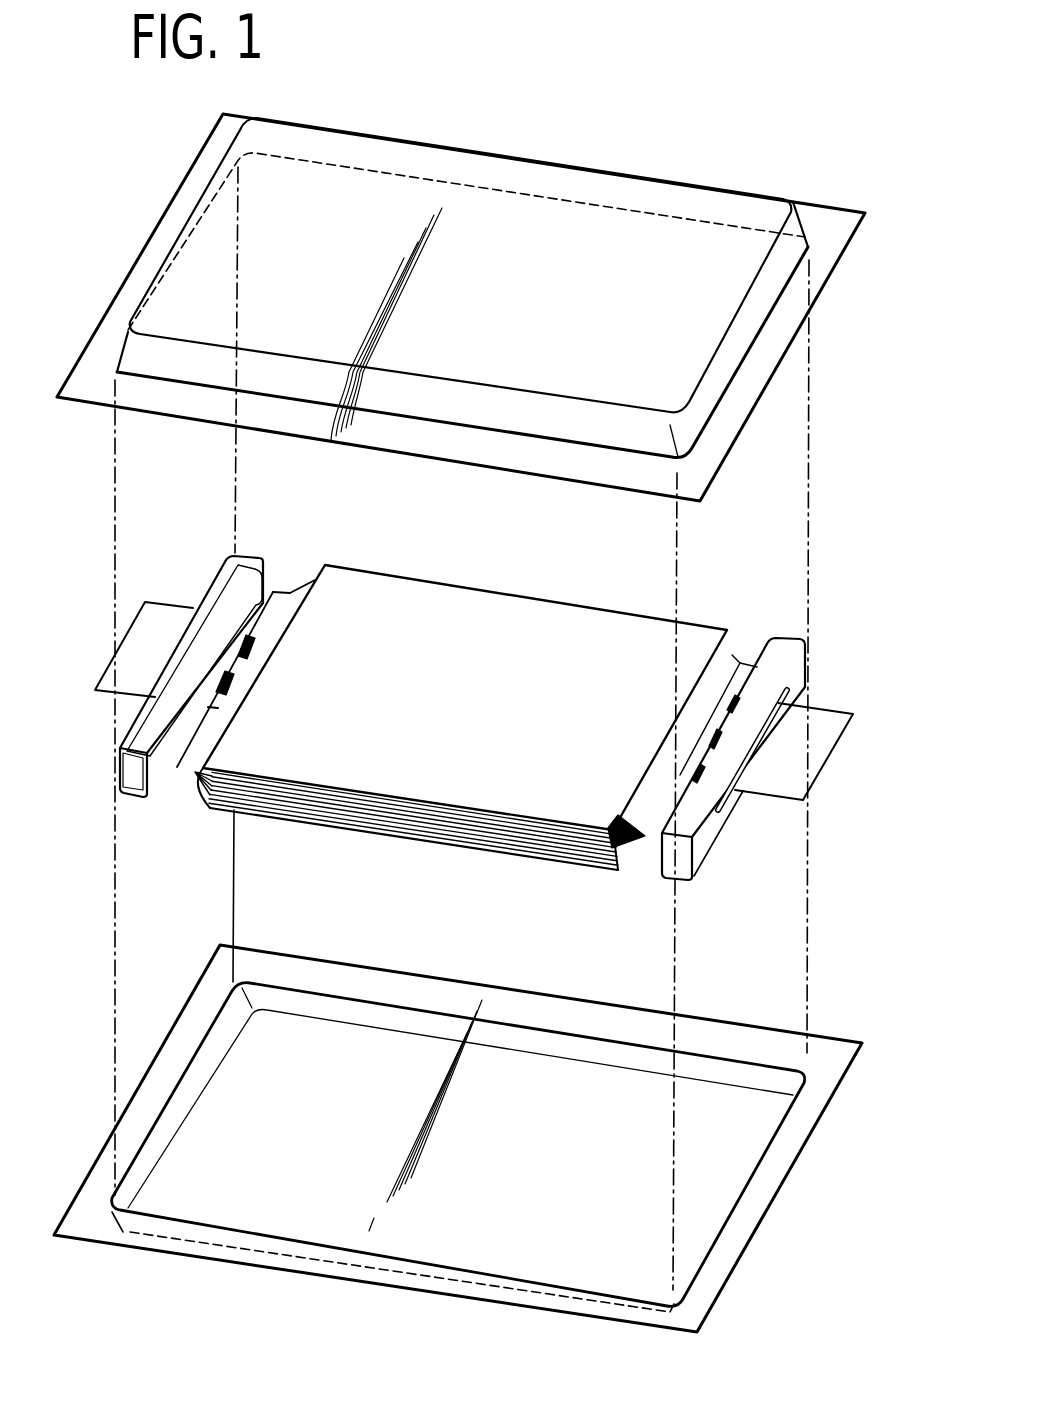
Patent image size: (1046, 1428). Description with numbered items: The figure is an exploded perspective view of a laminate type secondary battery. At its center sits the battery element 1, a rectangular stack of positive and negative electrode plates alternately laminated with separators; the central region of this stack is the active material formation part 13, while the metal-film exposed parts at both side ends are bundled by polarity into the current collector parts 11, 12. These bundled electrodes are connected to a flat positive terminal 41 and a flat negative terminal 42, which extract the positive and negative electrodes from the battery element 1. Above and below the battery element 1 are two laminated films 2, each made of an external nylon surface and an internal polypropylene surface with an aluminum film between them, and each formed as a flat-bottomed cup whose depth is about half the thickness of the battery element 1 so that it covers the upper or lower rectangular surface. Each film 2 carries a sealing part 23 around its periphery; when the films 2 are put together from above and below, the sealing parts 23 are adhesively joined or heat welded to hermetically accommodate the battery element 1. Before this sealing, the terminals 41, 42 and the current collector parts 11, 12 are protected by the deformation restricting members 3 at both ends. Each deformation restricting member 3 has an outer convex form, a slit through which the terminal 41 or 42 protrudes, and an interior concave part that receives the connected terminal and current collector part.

The battery element 1 is at (467, 688).
The laminated film 2 is at (477, 704).
The deformation restricting member 3 is at (220, 590).
The current collector part 11 is at (757, 667).
The current collector part 12 is at (281, 600).
The active material formation part 13 is at (412, 595).
The sealing part 23 is at (818, 268).
The positive terminal 41 is at (827, 720).
The negative terminal 42 is at (107, 685).